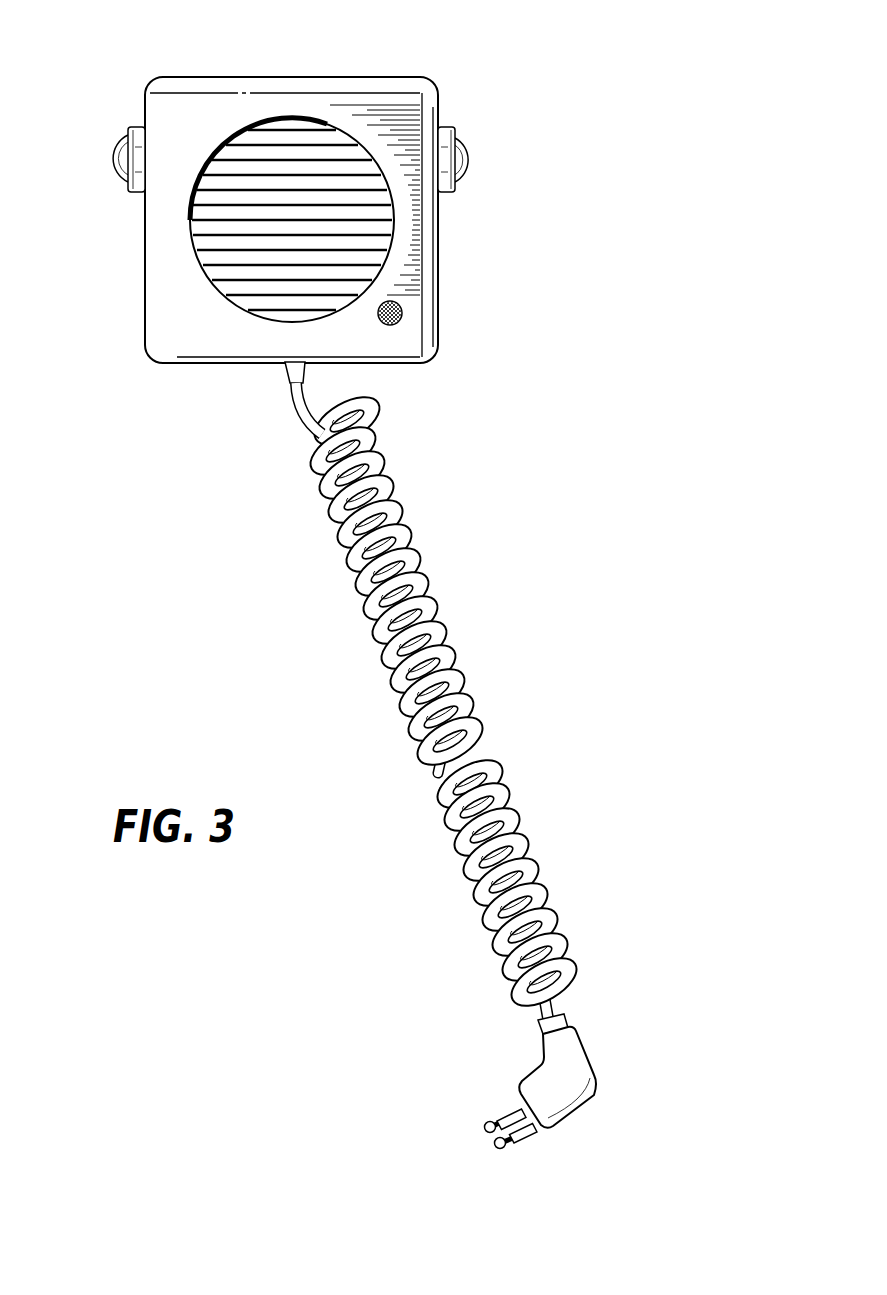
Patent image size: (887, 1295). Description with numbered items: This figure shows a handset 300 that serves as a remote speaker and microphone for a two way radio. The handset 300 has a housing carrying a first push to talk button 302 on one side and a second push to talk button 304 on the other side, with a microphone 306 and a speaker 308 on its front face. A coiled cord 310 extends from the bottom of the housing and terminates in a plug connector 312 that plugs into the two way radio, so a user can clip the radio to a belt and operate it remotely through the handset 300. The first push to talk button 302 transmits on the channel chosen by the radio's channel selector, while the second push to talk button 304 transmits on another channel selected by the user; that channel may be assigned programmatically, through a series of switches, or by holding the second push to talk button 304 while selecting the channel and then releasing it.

The handset 300 is at (524, 84).
The first push to talk button 302 is at (117, 168).
The second push to talk button 304 is at (466, 160).
The microphone 306 is at (402, 315).
The speaker 308 is at (323, 121).
The cord 310 is at (527, 842).
The plug connector 312 is at (585, 1055).